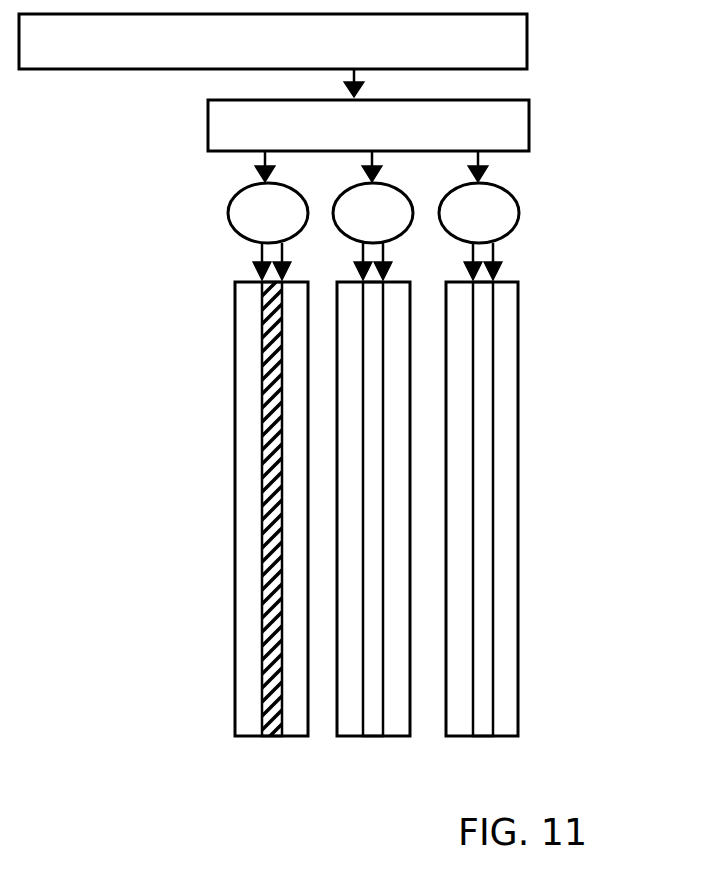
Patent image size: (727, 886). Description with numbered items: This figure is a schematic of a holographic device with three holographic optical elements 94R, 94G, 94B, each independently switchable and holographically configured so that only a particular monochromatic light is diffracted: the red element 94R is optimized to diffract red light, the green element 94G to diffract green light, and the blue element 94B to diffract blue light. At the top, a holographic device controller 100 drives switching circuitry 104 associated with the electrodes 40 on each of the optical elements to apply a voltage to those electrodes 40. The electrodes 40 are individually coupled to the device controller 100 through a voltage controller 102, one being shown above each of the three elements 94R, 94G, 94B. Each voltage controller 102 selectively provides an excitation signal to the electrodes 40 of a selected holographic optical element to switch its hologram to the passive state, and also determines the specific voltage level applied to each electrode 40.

The holographic device controller 100 is at (527, 45).
The switching circuitry 104 is at (529, 120).
The voltage controller 102 is at (373, 215).
The electrodes 40 is at (517, 281).
The red reflective holographic optical element 94R is at (272, 736).
The green reflective holographic optical element 94G is at (375, 736).
The blue reflective holographic optical element 94B is at (480, 736).